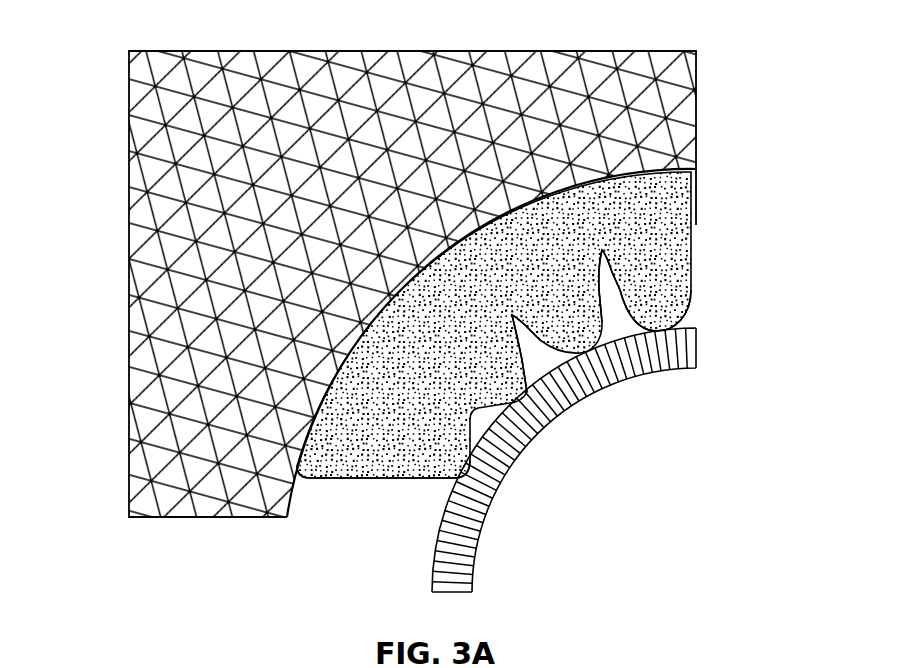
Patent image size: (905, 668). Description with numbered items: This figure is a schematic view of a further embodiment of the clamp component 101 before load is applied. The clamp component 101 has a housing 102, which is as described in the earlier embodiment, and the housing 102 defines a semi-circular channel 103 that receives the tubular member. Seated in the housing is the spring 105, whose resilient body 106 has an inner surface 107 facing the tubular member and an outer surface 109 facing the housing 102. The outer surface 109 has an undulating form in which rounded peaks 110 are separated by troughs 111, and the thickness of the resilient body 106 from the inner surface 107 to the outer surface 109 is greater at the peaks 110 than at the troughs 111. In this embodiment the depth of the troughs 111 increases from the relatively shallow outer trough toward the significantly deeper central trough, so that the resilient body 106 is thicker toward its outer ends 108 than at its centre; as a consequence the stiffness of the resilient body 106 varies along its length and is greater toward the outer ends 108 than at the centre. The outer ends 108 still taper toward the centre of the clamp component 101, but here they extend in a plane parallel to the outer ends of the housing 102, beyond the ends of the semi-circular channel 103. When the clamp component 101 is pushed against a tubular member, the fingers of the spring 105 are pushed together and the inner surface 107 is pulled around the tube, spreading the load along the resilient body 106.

The clamp component 101 is at (92, 131).
The housing 102 is at (678, 123).
The semi-circular channel 103 is at (678, 162).
The spring 105 is at (417, 478).
The resilient body 106 is at (696, 205).
The inner surface 107 is at (505, 187).
The outer ends 108 is at (358, 478).
The outer surface 109 is at (688, 298).
The peaks 110 is at (600, 387).
The troughs 111 is at (483, 415).